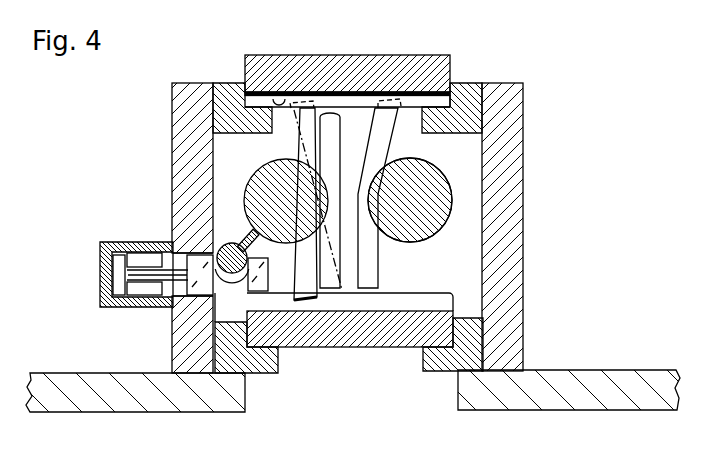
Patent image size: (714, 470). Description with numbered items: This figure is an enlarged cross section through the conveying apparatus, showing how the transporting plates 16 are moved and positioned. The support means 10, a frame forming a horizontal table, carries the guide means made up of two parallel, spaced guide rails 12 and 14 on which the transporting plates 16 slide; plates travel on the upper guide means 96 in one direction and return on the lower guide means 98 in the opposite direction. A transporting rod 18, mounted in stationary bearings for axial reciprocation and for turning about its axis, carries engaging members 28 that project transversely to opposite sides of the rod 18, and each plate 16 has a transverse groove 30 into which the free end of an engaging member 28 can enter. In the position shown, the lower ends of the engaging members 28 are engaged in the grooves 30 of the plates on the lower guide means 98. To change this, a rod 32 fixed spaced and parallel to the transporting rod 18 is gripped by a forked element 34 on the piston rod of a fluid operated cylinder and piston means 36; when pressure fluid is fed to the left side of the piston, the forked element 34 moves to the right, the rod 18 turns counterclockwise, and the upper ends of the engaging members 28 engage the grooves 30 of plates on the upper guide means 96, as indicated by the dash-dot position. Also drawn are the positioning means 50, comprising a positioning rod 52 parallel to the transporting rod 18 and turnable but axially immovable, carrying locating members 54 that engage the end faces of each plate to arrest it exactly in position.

The support means 10 is at (594, 378).
The guide rail 12 is at (470, 80).
The guide rail 14 is at (227, 82).
The transporting plate 16 is at (366, 55).
The transporting rod 18 is at (258, 173).
The engaging member 28 is at (337, 139).
The transverse groove 30 is at (277, 92).
The rod 32 is at (229, 243).
The forked element 34 is at (262, 266).
The cylinder and piston means 36 is at (131, 241).
The positioning means 50 is at (457, 193).
The positioning rod 52 is at (428, 229).
The locating member 54 is at (383, 141).
The upper guide means 96 is at (457, 79).
The lower guide means 98 is at (465, 302).